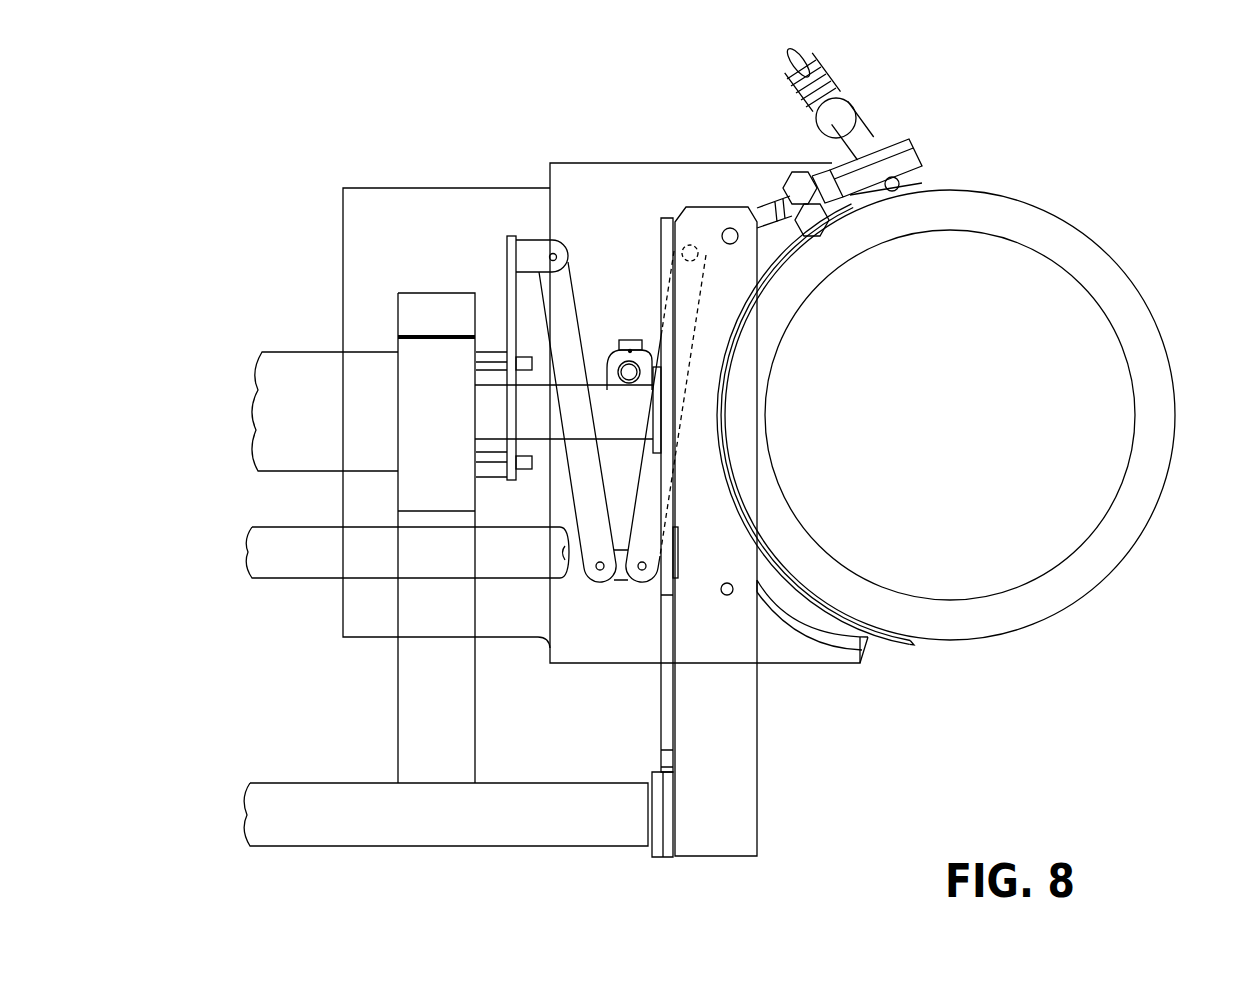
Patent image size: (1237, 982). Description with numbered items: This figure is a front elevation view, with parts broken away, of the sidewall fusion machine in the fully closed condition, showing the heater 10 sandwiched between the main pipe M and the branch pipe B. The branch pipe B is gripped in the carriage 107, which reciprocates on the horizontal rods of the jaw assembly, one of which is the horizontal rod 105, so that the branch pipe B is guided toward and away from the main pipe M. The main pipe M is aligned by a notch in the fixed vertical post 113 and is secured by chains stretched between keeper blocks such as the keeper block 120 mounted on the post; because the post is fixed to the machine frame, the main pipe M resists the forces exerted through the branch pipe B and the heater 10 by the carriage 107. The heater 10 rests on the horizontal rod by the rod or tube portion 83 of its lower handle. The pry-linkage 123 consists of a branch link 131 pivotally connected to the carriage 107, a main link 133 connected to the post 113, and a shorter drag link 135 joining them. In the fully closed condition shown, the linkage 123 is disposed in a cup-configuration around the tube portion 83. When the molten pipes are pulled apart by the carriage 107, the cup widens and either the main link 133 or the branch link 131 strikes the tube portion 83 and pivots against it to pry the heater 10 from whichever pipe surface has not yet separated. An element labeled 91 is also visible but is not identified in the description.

The branch pipe B is at (421, 188).
The carriage 107 is at (398, 309).
The horizontal rod 105 is at (533, 408).
The linkage 123 is at (606, 213).
The branch link 131 is at (563, 297).
The main link 133 is at (648, 538).
The drag link 135 is at (622, 582).
The rod or tube portion 83 is at (643, 363).
The vertical post 113 is at (704, 230).
The main pipe M is at (1150, 523).
The heater 10 is at (805, 618).
The spring 91 is at (808, 65).
The keeper block 120 is at (829, 190).